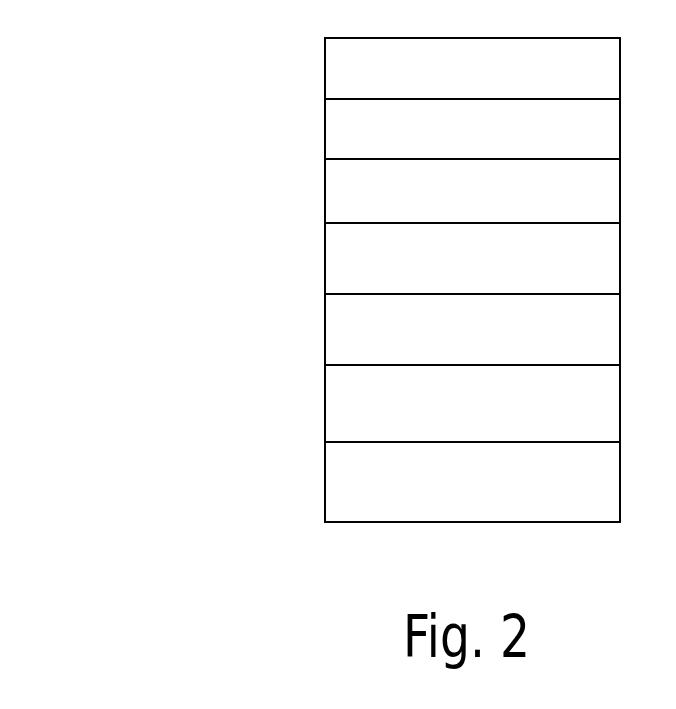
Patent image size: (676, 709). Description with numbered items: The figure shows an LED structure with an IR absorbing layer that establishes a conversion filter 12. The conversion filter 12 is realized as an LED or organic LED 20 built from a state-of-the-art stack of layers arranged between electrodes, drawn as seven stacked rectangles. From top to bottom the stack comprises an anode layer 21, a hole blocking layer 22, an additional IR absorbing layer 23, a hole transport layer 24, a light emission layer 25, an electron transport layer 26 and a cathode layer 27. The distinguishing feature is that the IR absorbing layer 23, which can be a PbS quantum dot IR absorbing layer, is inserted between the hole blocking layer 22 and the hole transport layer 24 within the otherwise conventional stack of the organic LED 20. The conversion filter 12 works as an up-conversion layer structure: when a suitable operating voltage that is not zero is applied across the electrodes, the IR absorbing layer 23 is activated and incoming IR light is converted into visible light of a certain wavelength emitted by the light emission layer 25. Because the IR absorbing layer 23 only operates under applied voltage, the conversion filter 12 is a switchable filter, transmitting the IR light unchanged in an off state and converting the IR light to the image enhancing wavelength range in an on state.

The conversion filter 12 is at (223, 62).
The organic LED 20 is at (472, 280).
The anode layer 21 is at (472, 68).
The hole blocking layer 22 is at (472, 129).
The IR absorbing layer 23 is at (472, 191).
The hole transport layer 24 is at (472, 258).
The light emission layer 25 is at (472, 329).
The electron transport layer 26 is at (472, 403).
The cathode layer 27 is at (472, 482).